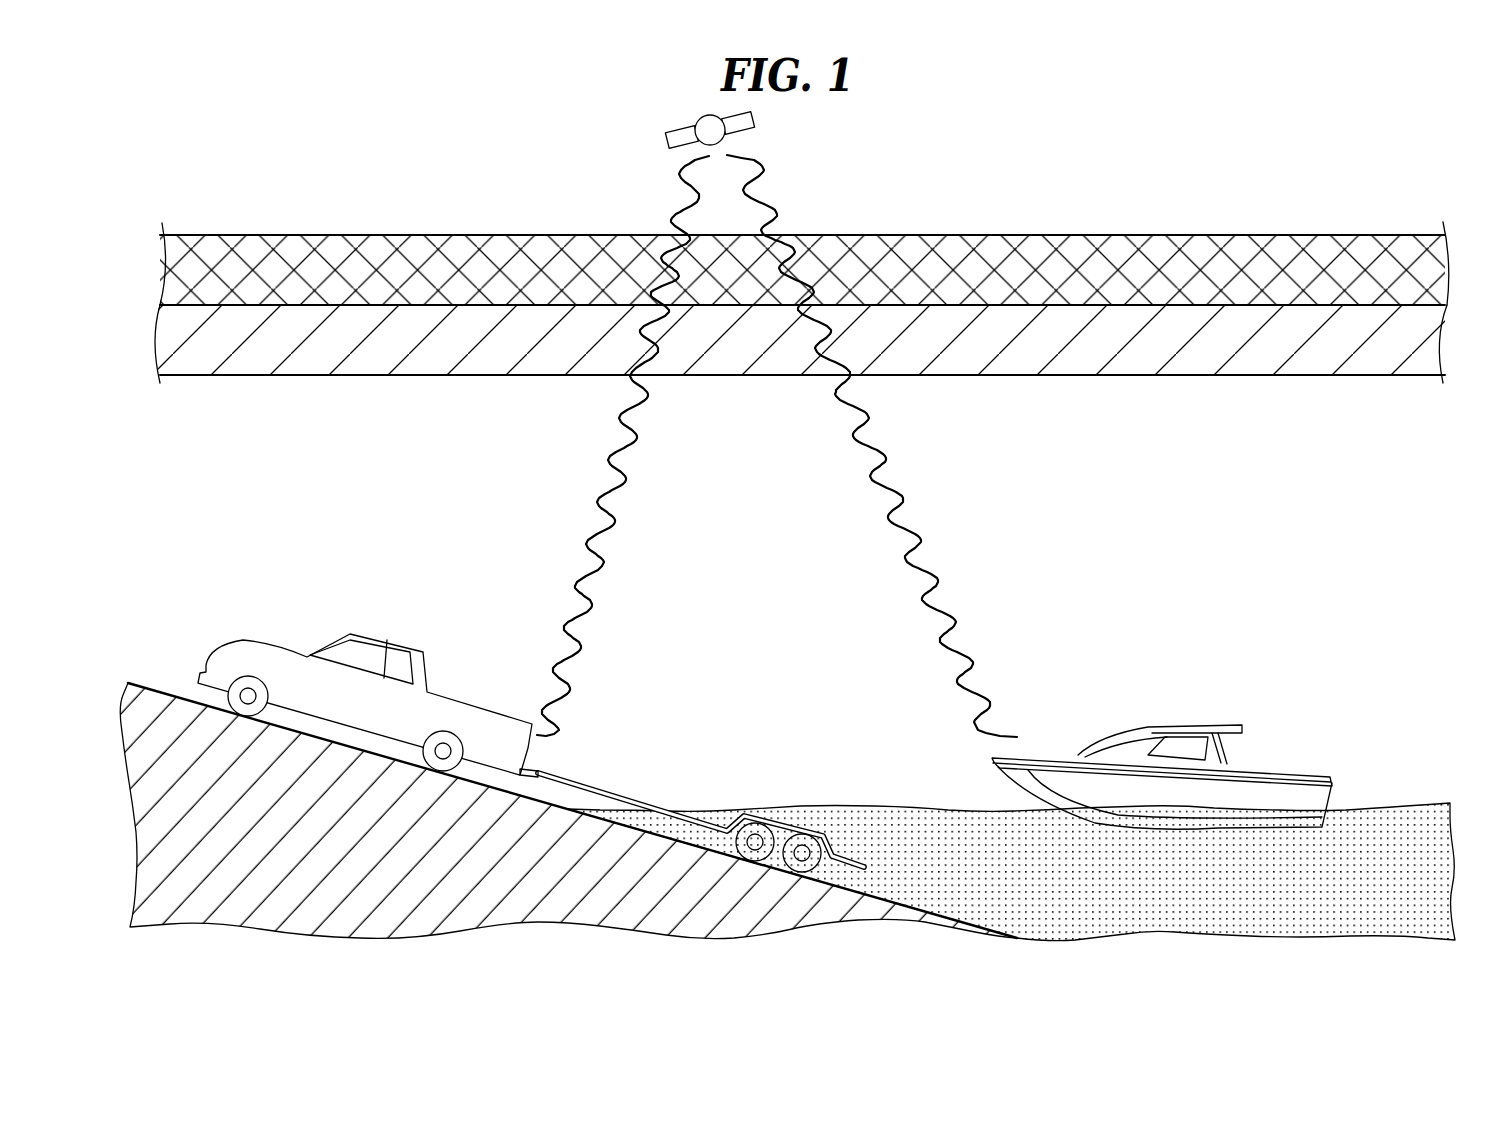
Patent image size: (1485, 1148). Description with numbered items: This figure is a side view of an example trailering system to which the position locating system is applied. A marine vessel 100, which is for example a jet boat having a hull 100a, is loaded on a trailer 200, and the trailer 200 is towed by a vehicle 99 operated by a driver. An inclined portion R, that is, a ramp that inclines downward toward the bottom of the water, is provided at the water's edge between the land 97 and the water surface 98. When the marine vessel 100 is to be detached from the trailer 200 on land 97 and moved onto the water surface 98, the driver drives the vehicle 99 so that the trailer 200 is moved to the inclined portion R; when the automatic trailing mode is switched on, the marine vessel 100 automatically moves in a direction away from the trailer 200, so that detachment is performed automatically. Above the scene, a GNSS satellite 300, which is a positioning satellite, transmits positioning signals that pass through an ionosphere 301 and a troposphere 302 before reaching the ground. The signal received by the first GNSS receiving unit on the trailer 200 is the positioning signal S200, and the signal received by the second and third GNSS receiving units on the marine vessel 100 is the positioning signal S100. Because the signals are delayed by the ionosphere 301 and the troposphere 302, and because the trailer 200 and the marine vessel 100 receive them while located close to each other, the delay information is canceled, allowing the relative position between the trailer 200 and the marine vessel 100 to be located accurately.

The GNSS satellite 300 is at (757, 121).
The ionosphere 301 is at (1192, 233).
The troposphere 302 is at (1198, 378).
The positioning signal S200 is at (615, 520).
The positioning signal S100 is at (889, 520).
The vehicle 99 is at (395, 639).
The land 97 is at (128, 682).
The water surface 98 is at (1413, 806).
The trailer 200 is at (559, 771).
The inclined portion R is at (617, 773).
The marine vessel 100 is at (1162, 729).
The hull 100a is at (1048, 758).